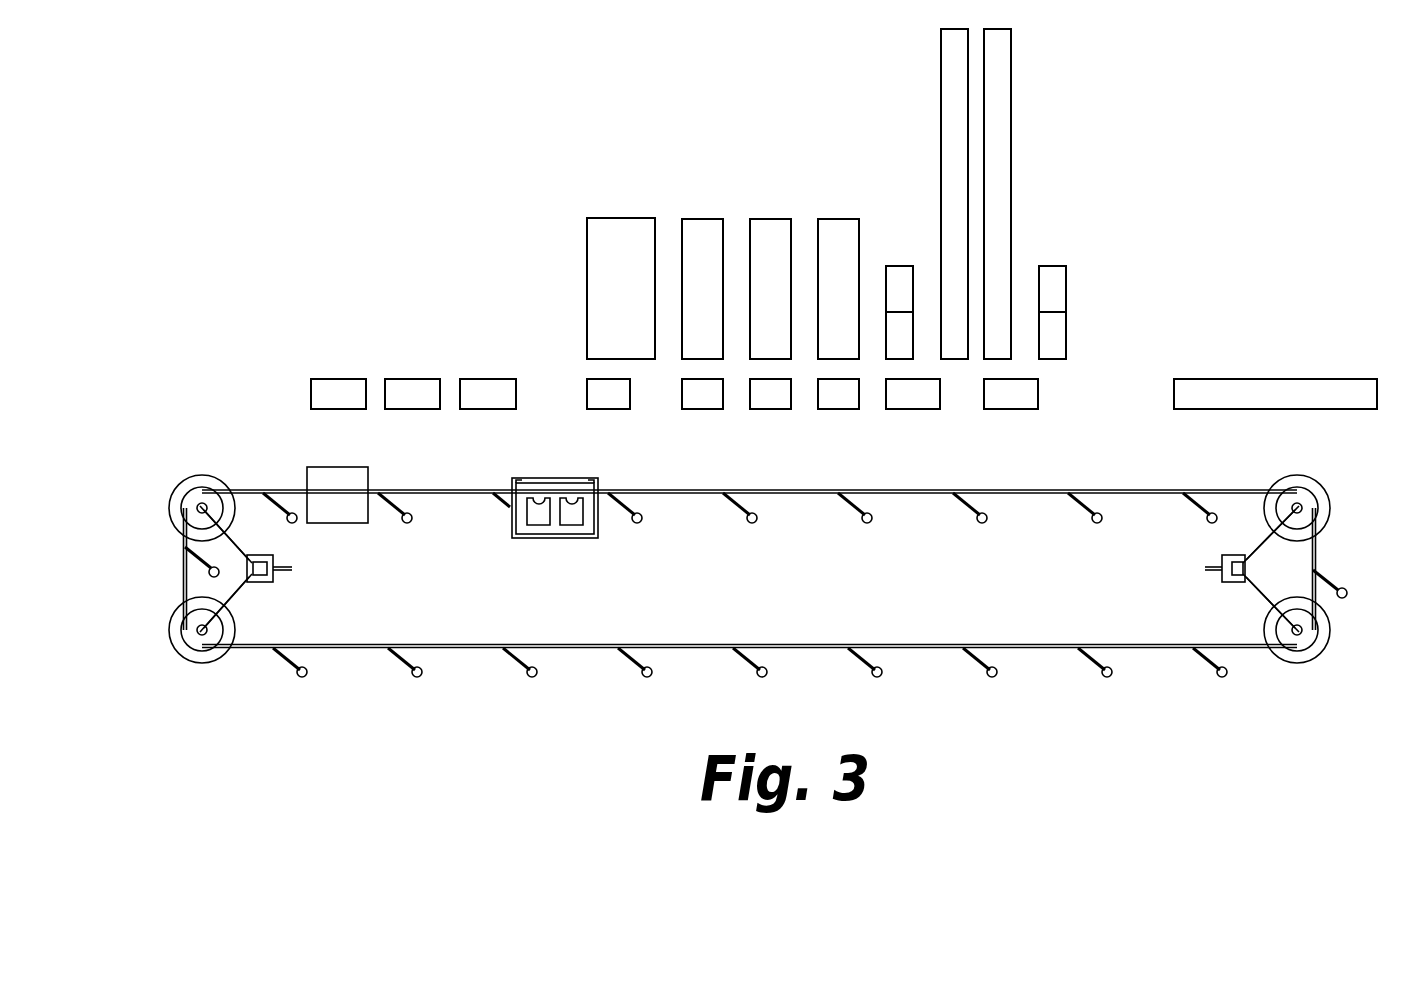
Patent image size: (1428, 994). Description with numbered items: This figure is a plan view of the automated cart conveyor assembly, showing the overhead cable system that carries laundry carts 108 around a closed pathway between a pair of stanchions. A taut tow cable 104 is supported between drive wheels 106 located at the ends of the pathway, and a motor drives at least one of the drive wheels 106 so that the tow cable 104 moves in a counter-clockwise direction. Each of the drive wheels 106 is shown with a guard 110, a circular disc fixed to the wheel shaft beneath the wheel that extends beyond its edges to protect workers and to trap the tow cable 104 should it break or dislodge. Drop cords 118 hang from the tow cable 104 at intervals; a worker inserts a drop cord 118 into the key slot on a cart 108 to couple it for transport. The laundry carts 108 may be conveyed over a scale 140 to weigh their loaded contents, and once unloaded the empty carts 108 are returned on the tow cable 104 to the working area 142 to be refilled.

The tow cable 104 is at (1042, 643).
The drive wheels 106 is at (195, 492).
The laundry cart 108 is at (562, 538).
The guard 110 is at (168, 507).
The drop cord 118 is at (1093, 662).
The scale 140 is at (348, 475).
The working area 142 is at (648, 177).